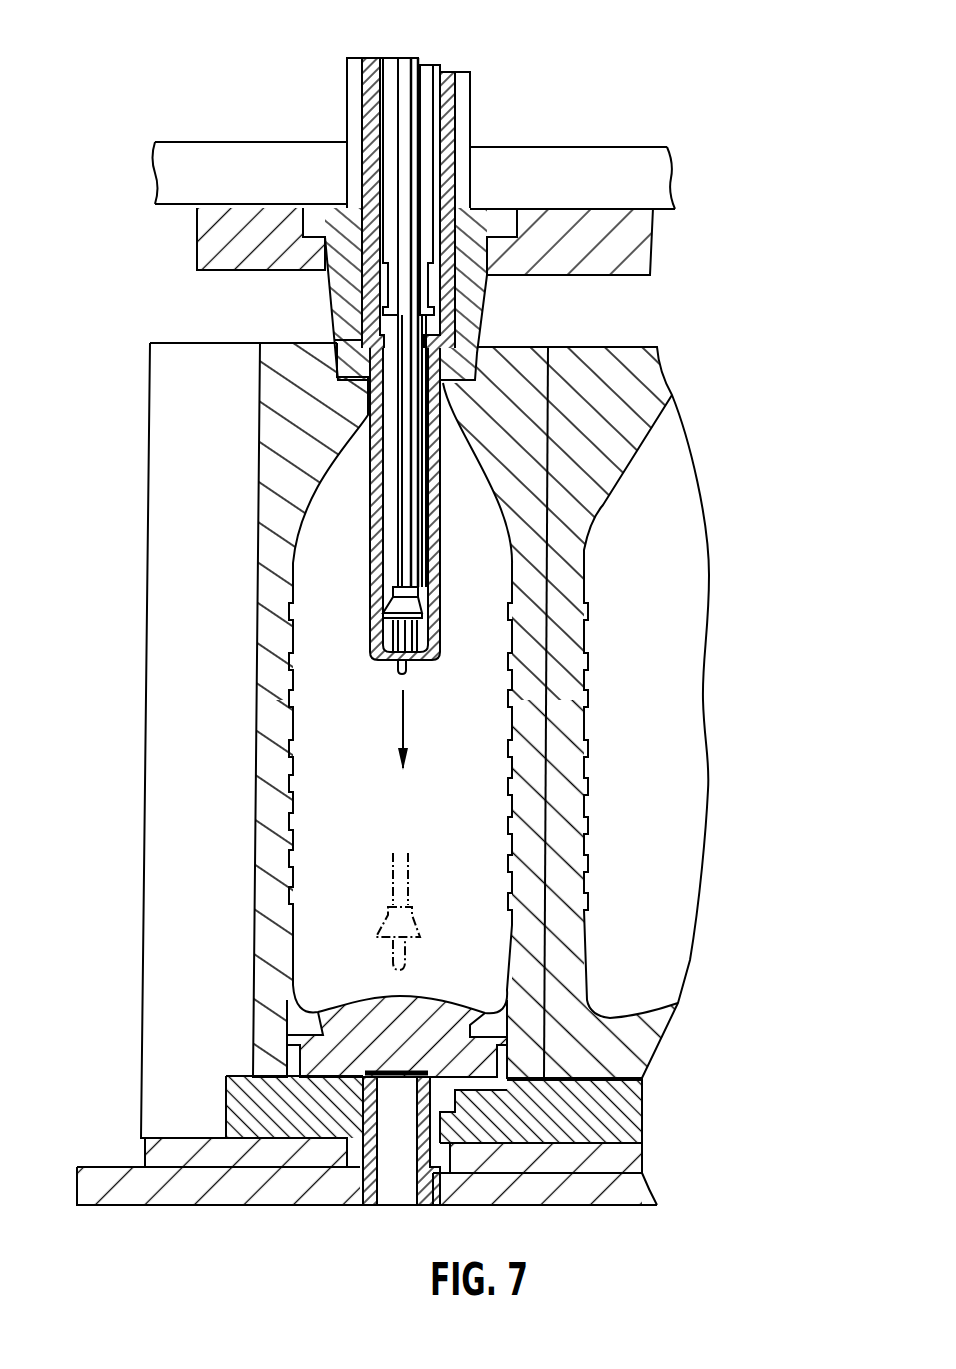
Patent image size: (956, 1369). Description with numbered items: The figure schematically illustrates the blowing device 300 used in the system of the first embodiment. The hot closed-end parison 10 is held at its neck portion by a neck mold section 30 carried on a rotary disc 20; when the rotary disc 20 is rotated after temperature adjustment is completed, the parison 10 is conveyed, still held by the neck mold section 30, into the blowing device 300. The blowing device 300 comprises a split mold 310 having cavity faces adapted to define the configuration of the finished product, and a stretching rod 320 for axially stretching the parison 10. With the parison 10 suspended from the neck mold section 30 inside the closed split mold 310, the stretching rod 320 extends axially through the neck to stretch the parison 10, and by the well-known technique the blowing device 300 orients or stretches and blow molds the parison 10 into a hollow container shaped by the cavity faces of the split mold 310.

The blowing device 300 is at (575, 84).
The rotary disc 20 is at (612, 162).
The neck mold section 30 is at (468, 317).
The stretching rod 320 is at (400, 430).
The parison 10 is at (440, 496).
The split mold 310 is at (533, 683).